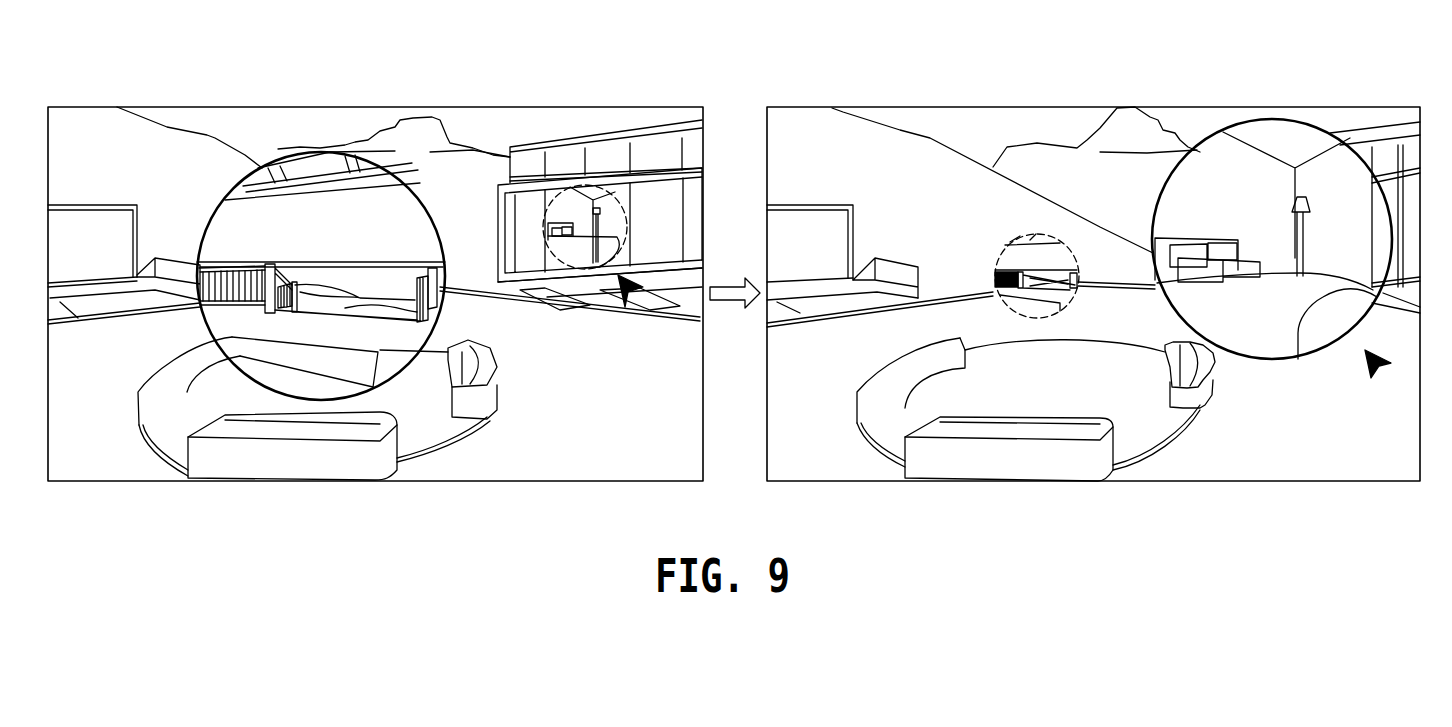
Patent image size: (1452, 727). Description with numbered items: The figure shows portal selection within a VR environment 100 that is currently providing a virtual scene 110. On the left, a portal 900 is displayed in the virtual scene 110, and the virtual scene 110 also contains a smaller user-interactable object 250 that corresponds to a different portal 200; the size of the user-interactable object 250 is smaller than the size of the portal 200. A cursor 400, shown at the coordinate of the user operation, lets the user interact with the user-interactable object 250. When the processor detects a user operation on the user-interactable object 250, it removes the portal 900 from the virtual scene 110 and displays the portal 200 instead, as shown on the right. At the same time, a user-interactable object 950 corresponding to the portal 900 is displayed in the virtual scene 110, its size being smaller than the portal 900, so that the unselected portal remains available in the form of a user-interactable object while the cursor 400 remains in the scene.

The VR environment 100 is at (628, 107).
The virtual scene 110 is at (90, 137).
The portal 200 is at (1177, 167).
The user-interactable object 250 is at (567, 186).
The cursor 400 is at (627, 284).
The portal 900 is at (233, 183).
The user-interactable object 950 is at (1000, 256).